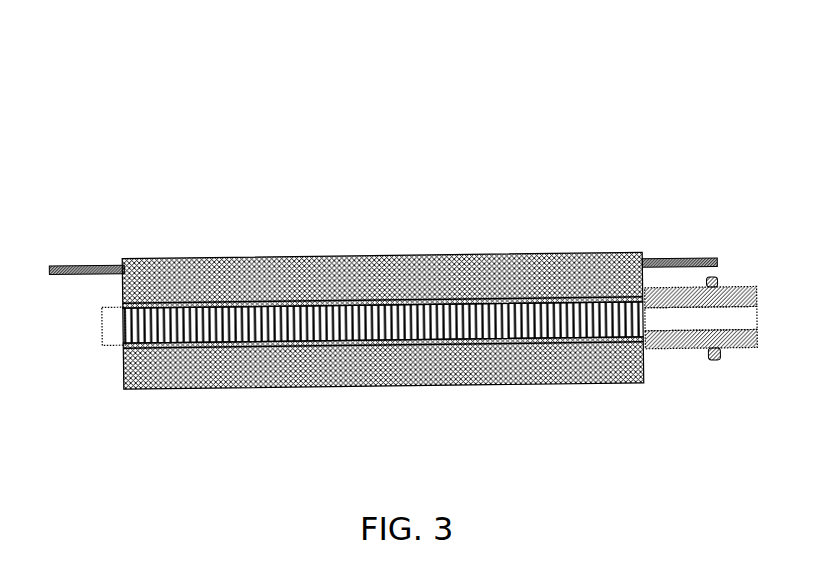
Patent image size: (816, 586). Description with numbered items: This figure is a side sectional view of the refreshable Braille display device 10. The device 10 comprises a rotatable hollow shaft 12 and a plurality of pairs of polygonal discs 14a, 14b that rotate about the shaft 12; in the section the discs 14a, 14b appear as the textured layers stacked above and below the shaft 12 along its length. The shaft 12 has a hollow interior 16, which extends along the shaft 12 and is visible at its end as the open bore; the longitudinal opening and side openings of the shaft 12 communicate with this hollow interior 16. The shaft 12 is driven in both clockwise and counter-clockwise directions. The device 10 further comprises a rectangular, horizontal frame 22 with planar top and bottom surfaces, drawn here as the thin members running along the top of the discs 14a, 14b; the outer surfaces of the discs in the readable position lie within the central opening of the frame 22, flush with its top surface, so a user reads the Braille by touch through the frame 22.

The device 10 is at (404, 244).
The rotatable hollow shaft 12 is at (733, 342).
The polygonal disc 14a is at (125, 370).
The polygonal disc 14b is at (138, 270).
The hollow interior 16 is at (685, 320).
The horizontal frame 22 is at (63, 277).